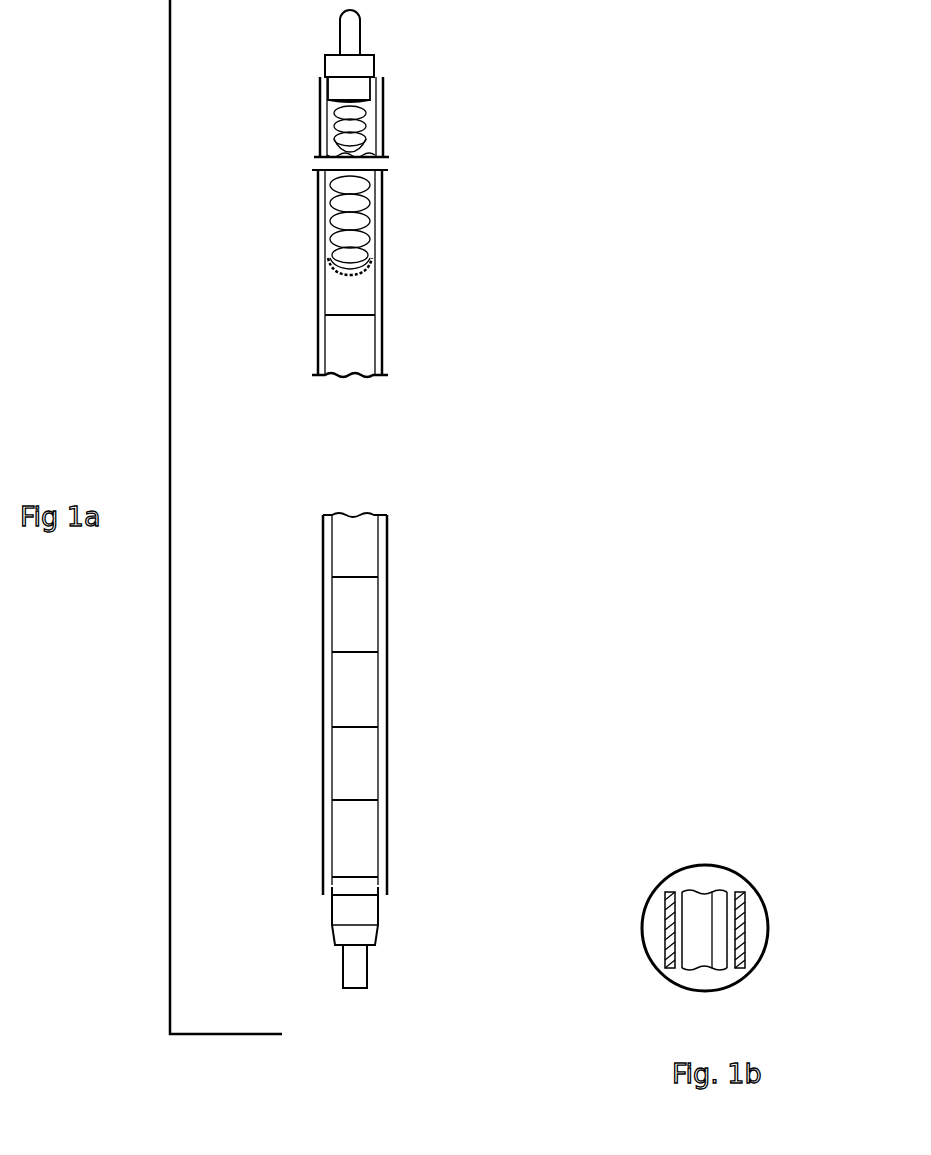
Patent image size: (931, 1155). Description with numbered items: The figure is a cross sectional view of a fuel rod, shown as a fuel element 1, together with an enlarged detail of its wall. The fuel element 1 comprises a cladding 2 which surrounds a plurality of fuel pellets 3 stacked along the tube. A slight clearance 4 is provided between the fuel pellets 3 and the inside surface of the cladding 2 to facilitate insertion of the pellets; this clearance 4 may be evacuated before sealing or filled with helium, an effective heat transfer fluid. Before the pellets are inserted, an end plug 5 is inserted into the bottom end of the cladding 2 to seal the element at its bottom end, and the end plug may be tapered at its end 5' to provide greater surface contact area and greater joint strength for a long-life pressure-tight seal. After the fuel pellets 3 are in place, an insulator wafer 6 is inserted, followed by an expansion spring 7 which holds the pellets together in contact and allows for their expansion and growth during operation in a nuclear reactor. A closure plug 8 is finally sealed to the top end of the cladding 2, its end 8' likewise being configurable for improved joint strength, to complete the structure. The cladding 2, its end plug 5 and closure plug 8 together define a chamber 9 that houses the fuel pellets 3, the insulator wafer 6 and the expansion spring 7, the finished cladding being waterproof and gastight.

In FIG. 1A, the fuel element 1 is at (498, 536).
In FIG. 1A, the cladding 2 is at (384, 327).
In FIG. 1B, the cladding 2 is at (748, 925).
In FIG. 1A, the fuel pellets 3 is at (352, 625).
In FIG. 1B, the fuel pellets 3 is at (700, 946).
In FIG. 1A, the clearance 4 is at (323, 341).
In FIG. 1B, the clearance 4 is at (670, 908).
In FIG. 1A, the end plug 5 is at (413, 937).
In FIG. 1A, the tapered end of end plug 5' is at (311, 912).
In FIG. 1A, the insulator wafer 6 is at (374, 267).
In FIG. 1A, the expansion spring 7 is at (374, 220).
In FIG. 1A, the closure plug 8 is at (405, 57).
In FIG. 1A, the end of closure plug 8' is at (307, 107).
In FIG. 1A, the chamber 9 is at (374, 118).